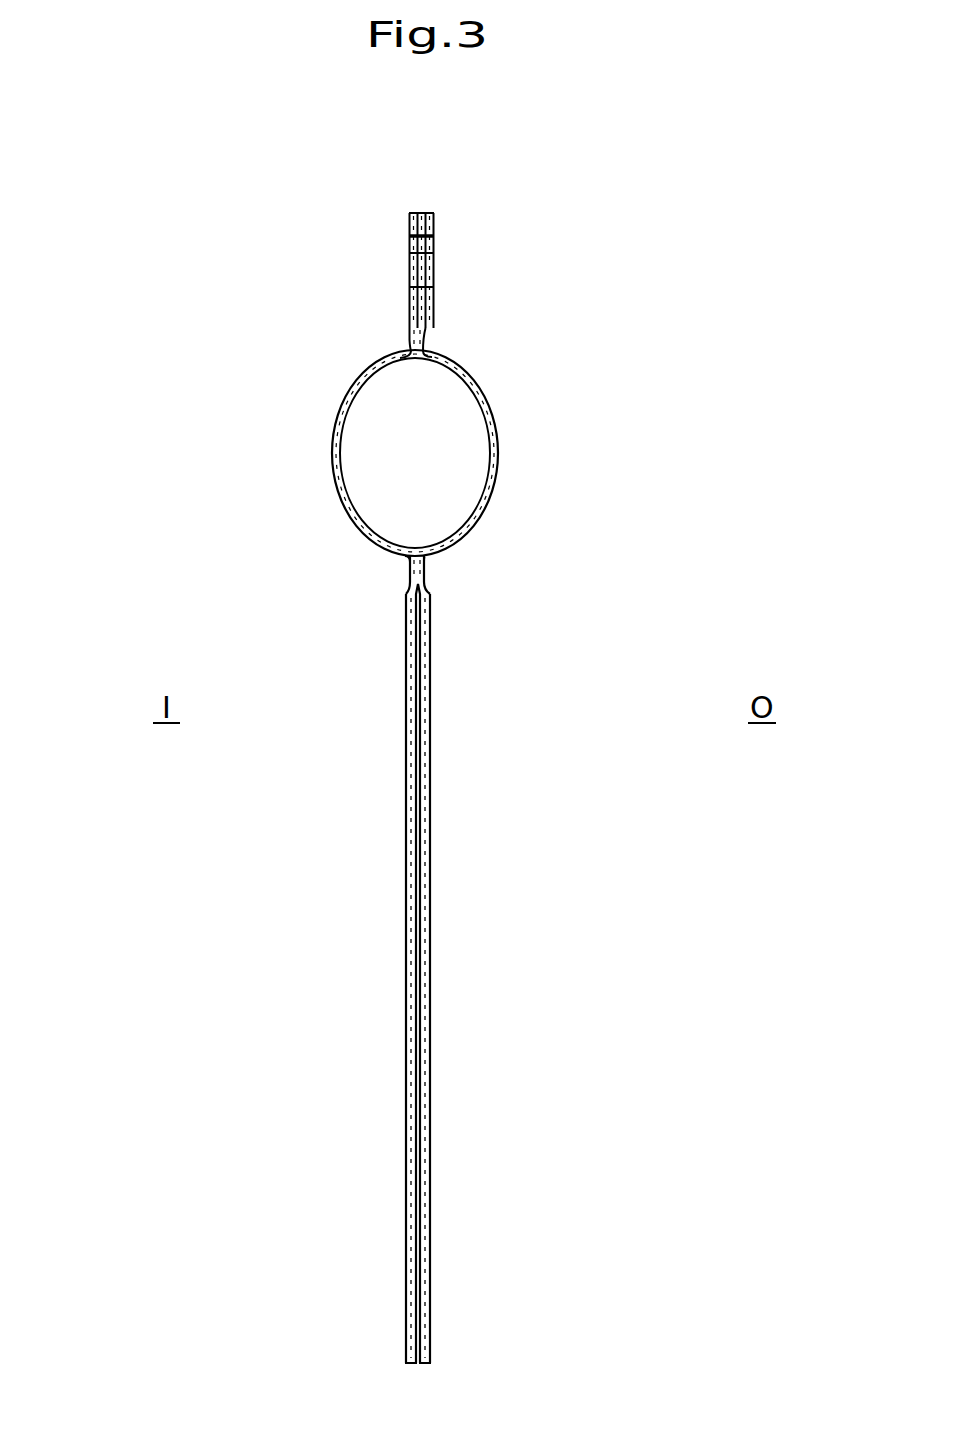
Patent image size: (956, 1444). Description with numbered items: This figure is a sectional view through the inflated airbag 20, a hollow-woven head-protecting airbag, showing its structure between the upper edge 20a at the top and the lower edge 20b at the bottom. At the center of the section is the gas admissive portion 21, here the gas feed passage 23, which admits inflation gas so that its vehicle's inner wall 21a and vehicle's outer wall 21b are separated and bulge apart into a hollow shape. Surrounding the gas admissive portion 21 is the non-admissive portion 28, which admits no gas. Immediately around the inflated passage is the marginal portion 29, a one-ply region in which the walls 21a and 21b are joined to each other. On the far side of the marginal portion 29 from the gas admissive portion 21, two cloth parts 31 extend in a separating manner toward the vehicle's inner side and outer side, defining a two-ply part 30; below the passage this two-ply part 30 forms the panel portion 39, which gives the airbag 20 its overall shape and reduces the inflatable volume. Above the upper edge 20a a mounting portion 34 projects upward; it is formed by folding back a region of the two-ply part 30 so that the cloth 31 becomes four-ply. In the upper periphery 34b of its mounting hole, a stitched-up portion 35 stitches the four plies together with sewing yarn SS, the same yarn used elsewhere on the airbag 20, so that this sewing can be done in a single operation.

The airbag 20 is at (226, 295).
The upper edge 20a is at (330, 305).
The lower edge 20b is at (448, 1352).
The gas admissive portion 21 is at (441, 453).
The vehicle's inner wall 21a is at (333, 455).
The vehicle's outer wall 21b is at (498, 433).
The gas feed passage 23 is at (453, 472).
The non-admissive portion 28 is at (475, 750).
The marginal portion 29 is at (410, 342).
The two-ply part 30 is at (440, 725).
The cloth part 31 is at (411, 205).
The mounting portion 34 is at (453, 295).
The periphery 34b is at (408, 243).
The stitched-up portion 35 is at (396, 232).
The panel portion 39 is at (442, 977).
The sewing yarn SS is at (436, 237).